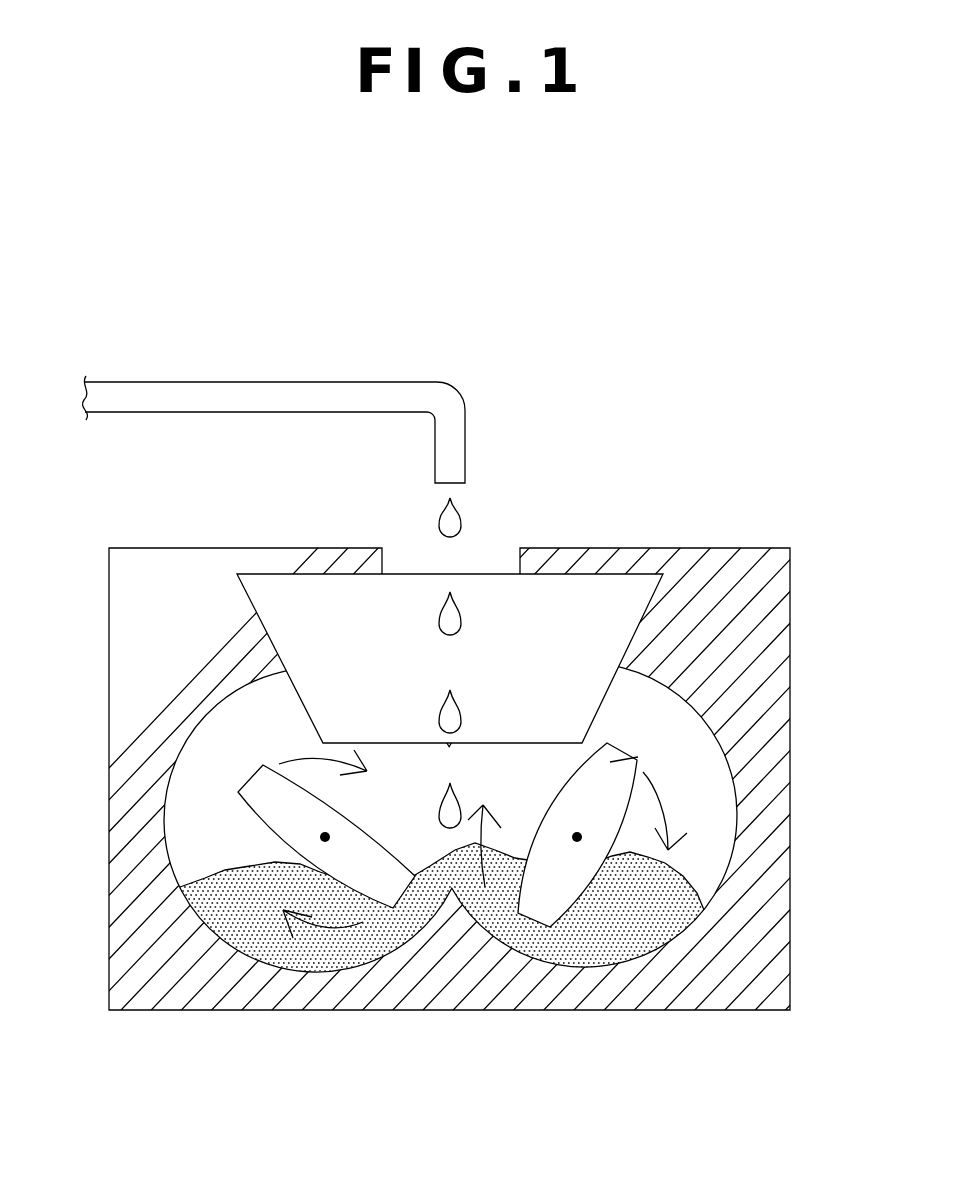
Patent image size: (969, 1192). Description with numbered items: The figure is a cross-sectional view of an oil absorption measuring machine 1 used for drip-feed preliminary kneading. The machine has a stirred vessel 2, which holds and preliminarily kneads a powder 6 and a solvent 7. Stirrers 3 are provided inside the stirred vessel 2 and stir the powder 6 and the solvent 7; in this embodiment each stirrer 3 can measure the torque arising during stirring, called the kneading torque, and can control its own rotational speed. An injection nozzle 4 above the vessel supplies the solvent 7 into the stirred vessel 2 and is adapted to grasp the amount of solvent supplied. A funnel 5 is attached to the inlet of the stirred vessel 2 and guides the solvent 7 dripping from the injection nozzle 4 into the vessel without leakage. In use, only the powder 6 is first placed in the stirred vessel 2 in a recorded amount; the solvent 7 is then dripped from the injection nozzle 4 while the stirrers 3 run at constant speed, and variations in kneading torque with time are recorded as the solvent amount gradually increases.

The absorption measuring machine 1 is at (643, 350).
The stirred vessel 2 is at (762, 660).
The stirrers 3 is at (245, 783).
The injection nozzle 4 is at (453, 438).
The funnel 5 is at (598, 600).
The powder 6 is at (690, 877).
The solvent 7 is at (435, 527).